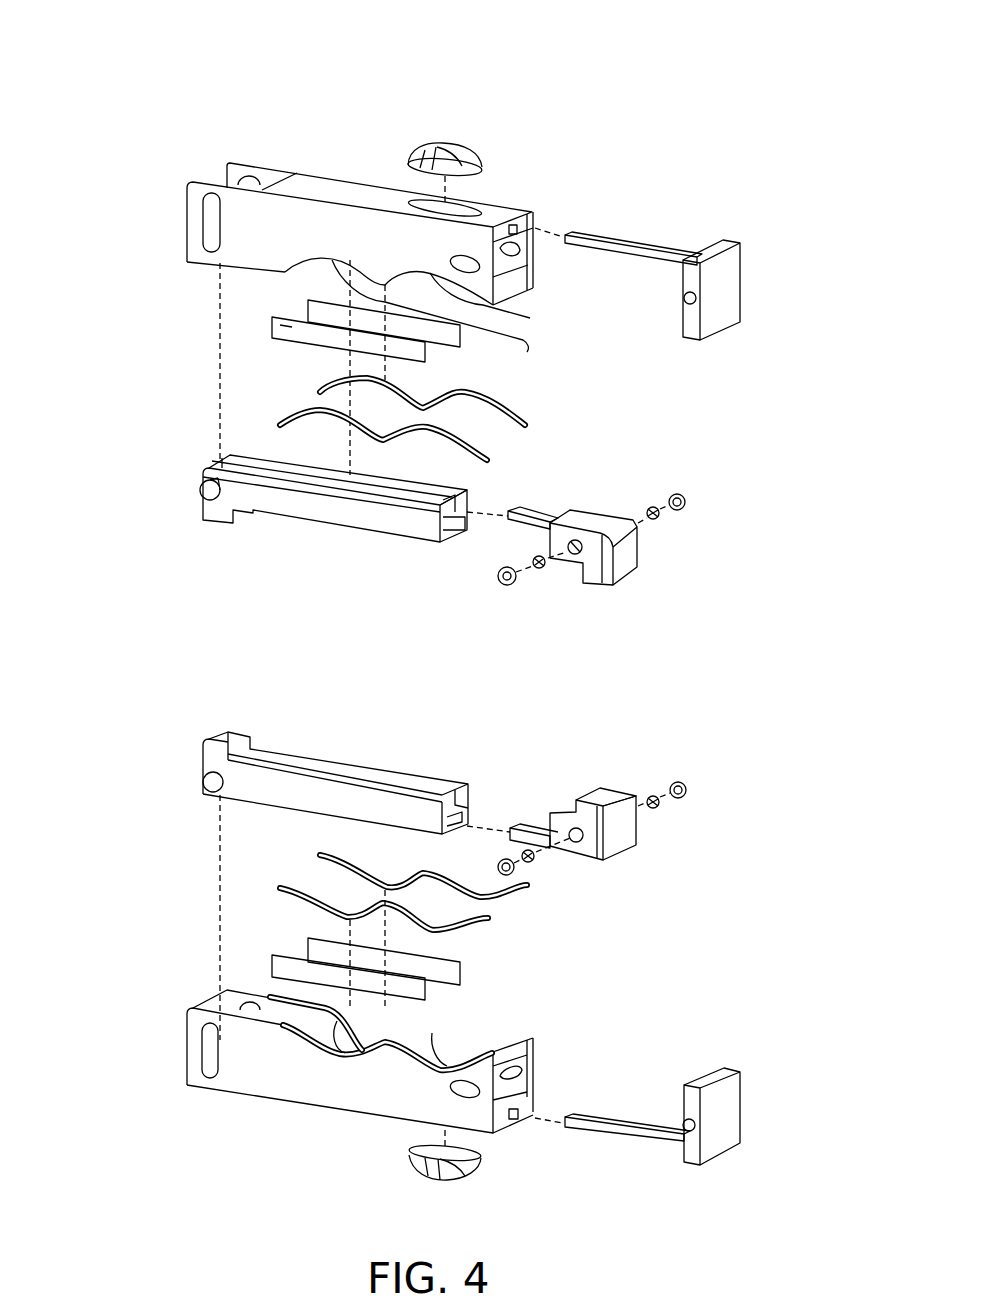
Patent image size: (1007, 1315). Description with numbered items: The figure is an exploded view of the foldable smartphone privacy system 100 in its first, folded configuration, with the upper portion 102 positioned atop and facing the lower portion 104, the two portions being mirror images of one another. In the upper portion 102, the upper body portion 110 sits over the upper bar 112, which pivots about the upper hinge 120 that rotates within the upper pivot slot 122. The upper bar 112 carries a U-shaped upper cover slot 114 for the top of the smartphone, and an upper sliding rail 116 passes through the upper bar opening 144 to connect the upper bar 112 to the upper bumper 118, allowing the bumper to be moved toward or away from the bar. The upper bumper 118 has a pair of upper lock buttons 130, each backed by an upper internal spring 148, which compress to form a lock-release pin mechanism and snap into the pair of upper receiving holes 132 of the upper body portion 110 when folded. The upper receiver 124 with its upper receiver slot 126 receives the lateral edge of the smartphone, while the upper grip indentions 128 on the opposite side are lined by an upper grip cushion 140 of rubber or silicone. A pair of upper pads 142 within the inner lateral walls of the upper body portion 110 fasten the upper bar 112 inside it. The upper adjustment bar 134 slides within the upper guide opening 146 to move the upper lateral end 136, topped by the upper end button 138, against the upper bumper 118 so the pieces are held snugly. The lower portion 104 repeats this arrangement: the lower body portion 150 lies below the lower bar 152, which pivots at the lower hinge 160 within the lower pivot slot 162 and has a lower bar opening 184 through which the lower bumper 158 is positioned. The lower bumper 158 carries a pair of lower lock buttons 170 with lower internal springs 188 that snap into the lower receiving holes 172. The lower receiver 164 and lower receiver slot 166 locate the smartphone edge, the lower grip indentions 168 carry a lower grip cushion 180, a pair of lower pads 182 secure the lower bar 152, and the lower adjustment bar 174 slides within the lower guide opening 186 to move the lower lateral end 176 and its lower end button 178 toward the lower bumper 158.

The foldable smartphone privacy system 100 is at (145, 27).
The upper portion 102 is at (660, 122).
The lower portion 104 is at (184, 1126).
The upper body portion 110 is at (313, 217).
The upper bar 112 is at (287, 502).
The upper cover slot 114 is at (450, 530).
The upper sliding rail 116 is at (537, 512).
The upper bumper 118 is at (623, 552).
The upper hinge 120 is at (200, 492).
The upper pivot slot 122 is at (213, 231).
The upper receiver 124 is at (450, 141).
The upper receiver slot 126 is at (467, 158).
The upper grip indentions 128 is at (416, 341).
The upper lock button 130 is at (684, 492).
The upper receiving holes 132 is at (497, 280).
The upper adjustment bar 134 is at (638, 242).
The upper lateral end 136 is at (720, 275).
The upper end button 138 is at (696, 300).
The upper grip cushion 140 is at (490, 458).
The upper pads 142 is at (308, 303).
The upper bar opening 144 is at (440, 507).
The upper guide opening 146 is at (532, 215).
The upper internal spring 148 is at (657, 504).
The lower body portion 150 is at (268, 1068).
The lower bar 152 is at (310, 790).
The lower bumper 158 is at (610, 852).
The lower hinge 160 is at (205, 780).
The lower pivot slot 162 is at (200, 1032).
The lower receiver 164 is at (420, 1172).
The lower receiver slot 166 is at (479, 1163).
The lower grip indentions 168 is at (460, 1042).
The lower lock button 170 is at (685, 786).
The lower receiving holes 172 is at (518, 1070).
The lower adjustment bar 174 is at (604, 1124).
The lower lateral end 176 is at (725, 1093).
The lower end button 178 is at (696, 1128).
The lower grip cushion 180 is at (316, 855).
The lower pads 182 is at (287, 947).
The lower bar opening 184 is at (468, 812).
The lower guide opening 186 is at (515, 1120).
The lower internal spring 188 is at (658, 806).